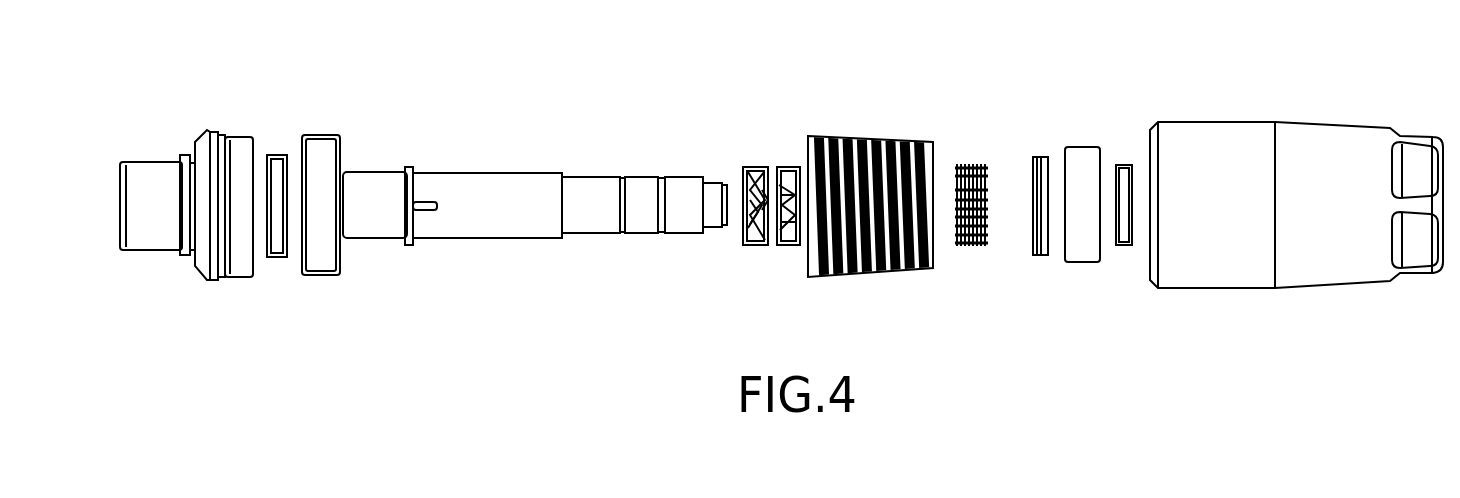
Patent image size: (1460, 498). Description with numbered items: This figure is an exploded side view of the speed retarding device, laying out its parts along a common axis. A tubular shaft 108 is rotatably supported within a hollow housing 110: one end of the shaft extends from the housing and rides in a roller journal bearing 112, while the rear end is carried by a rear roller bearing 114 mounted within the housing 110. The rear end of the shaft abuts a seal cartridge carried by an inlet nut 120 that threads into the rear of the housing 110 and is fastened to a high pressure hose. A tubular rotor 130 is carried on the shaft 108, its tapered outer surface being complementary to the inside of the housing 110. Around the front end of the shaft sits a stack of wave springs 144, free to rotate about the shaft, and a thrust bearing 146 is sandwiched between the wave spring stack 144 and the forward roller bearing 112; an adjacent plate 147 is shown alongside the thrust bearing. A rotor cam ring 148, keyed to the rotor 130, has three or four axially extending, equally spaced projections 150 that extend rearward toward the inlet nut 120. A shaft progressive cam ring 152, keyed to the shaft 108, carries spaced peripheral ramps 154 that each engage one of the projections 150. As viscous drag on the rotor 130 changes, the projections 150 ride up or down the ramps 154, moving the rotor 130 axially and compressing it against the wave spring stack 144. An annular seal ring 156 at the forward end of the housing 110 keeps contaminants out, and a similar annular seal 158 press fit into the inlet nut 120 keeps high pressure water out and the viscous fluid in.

The hollow housing 110 is at (1252, 122).
The tubular shaft 108 is at (540, 173).
The roller journal bearing 112 is at (1080, 147).
The rear roller bearing 114 is at (320, 136).
The inlet nut 120 is at (232, 136).
The tubular rotor 130 is at (867, 138).
The stack of wave springs 144 is at (965, 163).
The thrust bearing 146 is at (1033, 157).
The retainer plate 147 is at (1045, 157).
The rotor cam ring 148 is at (797, 167).
The projections 150 is at (773, 167).
The shaft progressive cam ring 152 is at (750, 167).
The peripheral ramps 154 is at (750, 208).
The annular seal ring 156 is at (1122, 165).
The annular seal 158 is at (276, 155).